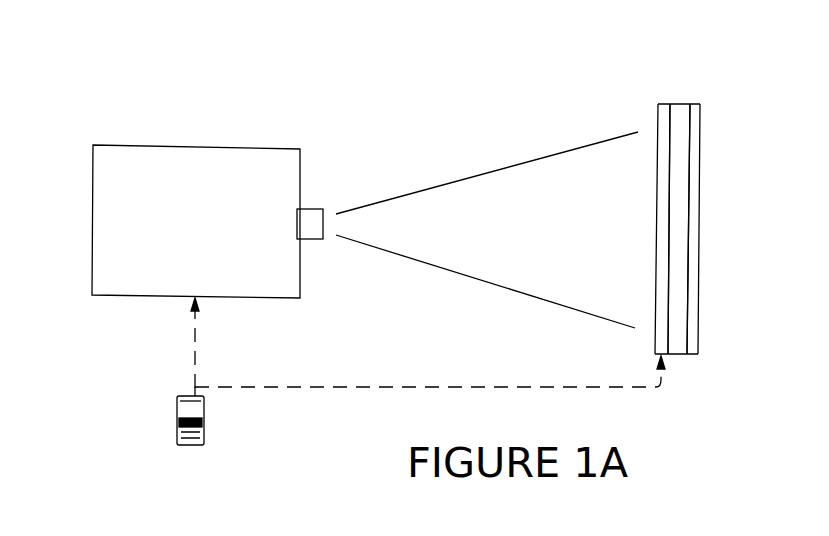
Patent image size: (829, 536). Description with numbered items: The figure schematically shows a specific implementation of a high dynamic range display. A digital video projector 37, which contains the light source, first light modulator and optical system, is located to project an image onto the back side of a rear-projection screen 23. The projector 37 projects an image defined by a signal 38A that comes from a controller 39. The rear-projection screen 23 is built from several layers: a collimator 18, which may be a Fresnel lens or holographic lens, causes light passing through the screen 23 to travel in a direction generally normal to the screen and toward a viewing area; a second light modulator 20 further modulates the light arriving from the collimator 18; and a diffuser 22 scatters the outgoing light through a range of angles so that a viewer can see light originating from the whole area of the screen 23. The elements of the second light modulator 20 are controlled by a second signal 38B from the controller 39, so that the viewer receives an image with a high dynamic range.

The collimator 18 is at (667, 104).
The second light modulator 20 is at (678, 103).
The diffuser 22 is at (680, 76).
The rear-projection screen 23 is at (671, 187).
The digital video projector 37 is at (248, 147).
The signal 38A is at (195, 343).
The signal 38B is at (305, 387).
The controller 39 is at (204, 422).